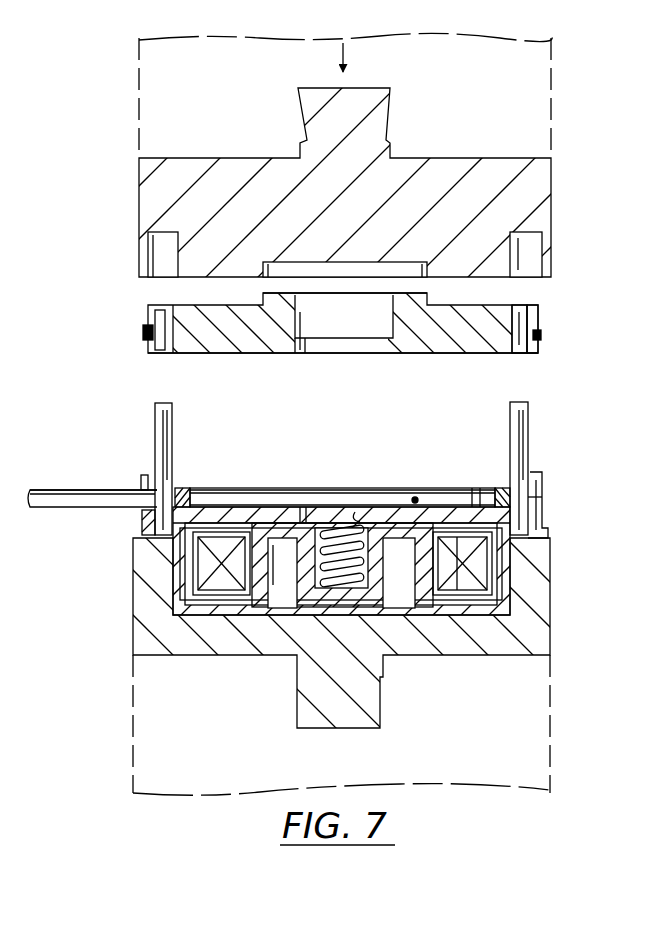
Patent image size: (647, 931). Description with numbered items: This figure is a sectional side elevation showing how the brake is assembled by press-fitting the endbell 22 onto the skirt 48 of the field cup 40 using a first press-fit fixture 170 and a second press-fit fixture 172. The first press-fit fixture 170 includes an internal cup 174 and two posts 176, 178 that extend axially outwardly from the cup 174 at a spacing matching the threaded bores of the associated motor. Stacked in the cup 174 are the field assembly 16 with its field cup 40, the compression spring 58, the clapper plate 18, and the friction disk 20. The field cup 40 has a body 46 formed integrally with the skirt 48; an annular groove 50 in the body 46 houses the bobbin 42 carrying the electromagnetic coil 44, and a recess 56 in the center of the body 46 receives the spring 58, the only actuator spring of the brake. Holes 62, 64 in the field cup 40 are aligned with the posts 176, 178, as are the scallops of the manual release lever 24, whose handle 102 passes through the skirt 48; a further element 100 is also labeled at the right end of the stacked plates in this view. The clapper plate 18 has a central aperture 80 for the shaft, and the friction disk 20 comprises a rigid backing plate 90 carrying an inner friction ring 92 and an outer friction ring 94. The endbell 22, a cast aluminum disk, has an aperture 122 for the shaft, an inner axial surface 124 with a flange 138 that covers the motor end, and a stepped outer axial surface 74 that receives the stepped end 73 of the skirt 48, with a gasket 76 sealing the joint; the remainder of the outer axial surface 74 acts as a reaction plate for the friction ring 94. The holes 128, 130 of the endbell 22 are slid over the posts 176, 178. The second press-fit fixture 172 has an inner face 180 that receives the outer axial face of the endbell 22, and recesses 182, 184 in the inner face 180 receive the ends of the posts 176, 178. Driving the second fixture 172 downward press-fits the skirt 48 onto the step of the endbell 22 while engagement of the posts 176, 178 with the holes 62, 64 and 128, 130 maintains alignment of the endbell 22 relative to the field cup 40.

The second press-fit fixture 172 is at (553, 184).
The recess 184 is at (158, 247).
The recess 182 is at (528, 250).
The inner face 180 is at (485, 280).
The inner axial surface 124 is at (187, 303).
The axial hole 130 is at (155, 313).
The flange 138 is at (145, 328).
The outer axial surface 74 is at (190, 355).
The endbell 22 is at (232, 355).
The aperture 122 is at (296, 323).
The axial hole 128 is at (520, 317).
The gasket 76 is at (541, 335).
The post 178 is at (155, 410).
The post 176 is at (528, 410).
The manual release lever 24 is at (112, 486).
The handle 102 is at (92, 467).
The hole 64 is at (173, 488).
The right bushing 100 is at (513, 495).
The outer friction ring 94 is at (235, 488).
The backing plate 90 is at (258, 496).
The friction disk 20 is at (294, 486).
The inner friction ring 92 is at (303, 508).
The central aperture 80 is at (356, 512).
The clapper plate 18 is at (416, 498).
The electromagnetic coil 44 is at (457, 540).
The stepped end 73 is at (532, 472).
The hole 62 is at (516, 497).
The skirt 48 is at (140, 523).
The annular groove 50 is at (195, 574).
The internal cup 174 is at (504, 570).
The first press-fit fixture 170 is at (552, 594).
The field assembly 16 is at (200, 604).
The field cup 40 is at (228, 602).
The compression spring 58 is at (303, 602).
The recess 56 is at (323, 618).
The bobbin 42 is at (455, 602).
The body 46 is at (483, 602).